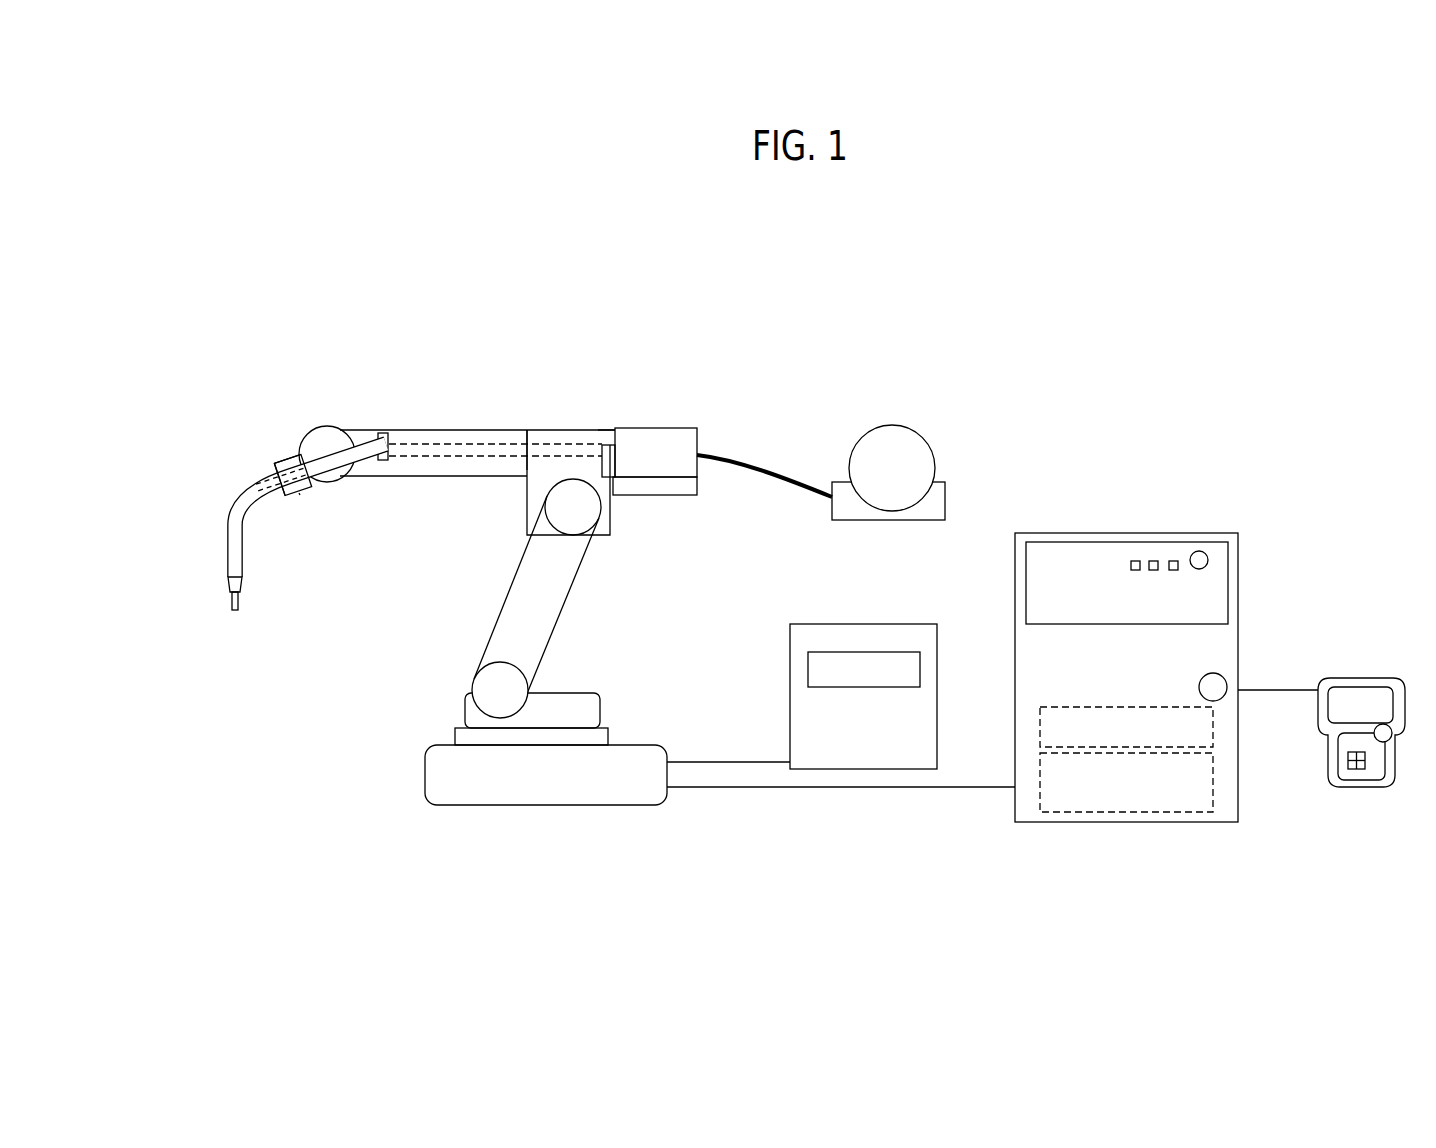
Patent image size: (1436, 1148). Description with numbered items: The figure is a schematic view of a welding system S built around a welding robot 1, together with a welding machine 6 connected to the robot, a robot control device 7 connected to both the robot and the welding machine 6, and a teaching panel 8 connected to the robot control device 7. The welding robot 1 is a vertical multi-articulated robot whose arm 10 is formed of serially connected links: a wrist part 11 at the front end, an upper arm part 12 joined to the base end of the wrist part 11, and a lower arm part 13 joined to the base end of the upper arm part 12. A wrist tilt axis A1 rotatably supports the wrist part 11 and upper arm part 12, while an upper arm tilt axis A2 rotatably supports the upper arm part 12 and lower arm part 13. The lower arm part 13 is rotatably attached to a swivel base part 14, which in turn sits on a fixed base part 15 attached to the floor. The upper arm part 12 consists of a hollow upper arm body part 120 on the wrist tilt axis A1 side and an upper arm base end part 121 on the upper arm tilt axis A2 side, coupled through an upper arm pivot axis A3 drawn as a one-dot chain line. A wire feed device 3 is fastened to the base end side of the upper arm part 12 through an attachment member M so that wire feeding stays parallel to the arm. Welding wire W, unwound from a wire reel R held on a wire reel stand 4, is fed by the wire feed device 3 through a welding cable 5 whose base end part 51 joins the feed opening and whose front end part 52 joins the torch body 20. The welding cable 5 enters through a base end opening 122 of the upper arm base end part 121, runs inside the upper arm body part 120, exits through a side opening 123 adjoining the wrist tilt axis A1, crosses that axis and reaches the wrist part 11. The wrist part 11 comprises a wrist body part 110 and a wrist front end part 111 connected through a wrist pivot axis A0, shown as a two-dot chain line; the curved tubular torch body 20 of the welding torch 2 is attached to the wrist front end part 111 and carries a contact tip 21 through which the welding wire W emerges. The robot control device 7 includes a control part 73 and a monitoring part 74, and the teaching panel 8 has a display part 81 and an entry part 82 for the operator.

The welding robot 1 is at (339, 733).
The welding torch 2 is at (212, 490).
The wire feed device 3 is at (670, 427).
The wire reel stand 4 is at (905, 445).
The welding cable 5 is at (453, 440).
The welding machine 6 is at (880, 623).
The robot control device 7 is at (1166, 522).
The teaching panel 8 is at (1350, 667).
The arm 10 is at (513, 534).
The wrist part 11 is at (293, 437).
The upper arm part 12 is at (423, 409).
The lower arm part 13 is at (535, 597).
The swivel base part 14 is at (578, 702).
The fixed base part 15 is at (635, 757).
The torch body 20 is at (257, 480).
The contact tip 21 is at (240, 583).
The base end part 51 is at (608, 450).
The front end part 52 is at (287, 448).
The control part 73 is at (1216, 732).
The monitoring part 74 is at (1216, 797).
The display part 81 is at (1358, 697).
The entry part 82 is at (1373, 768).
The wrist body part 110 is at (310, 489).
The wrist front end part 111 is at (297, 489).
The upper arm body part 120 is at (495, 440).
The upper arm base end part 121 is at (577, 440).
The base end opening 122 is at (608, 427).
The side opening 123 is at (383, 432).
The wrist pivot axis A0 is at (300, 496).
The wrist tilt axis A1 is at (325, 436).
The upper arm tilt axis A2 is at (566, 505).
The upper arm pivot axis A3 is at (528, 425).
The attachment member M is at (685, 490).
The wire reel R is at (902, 448).
The welding system S is at (355, 330).
The welding wire W is at (238, 603).